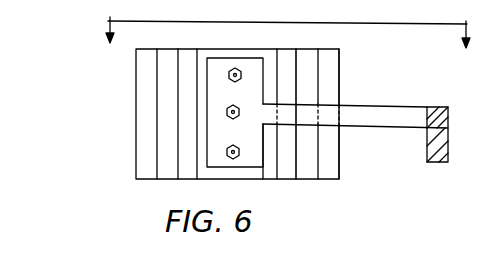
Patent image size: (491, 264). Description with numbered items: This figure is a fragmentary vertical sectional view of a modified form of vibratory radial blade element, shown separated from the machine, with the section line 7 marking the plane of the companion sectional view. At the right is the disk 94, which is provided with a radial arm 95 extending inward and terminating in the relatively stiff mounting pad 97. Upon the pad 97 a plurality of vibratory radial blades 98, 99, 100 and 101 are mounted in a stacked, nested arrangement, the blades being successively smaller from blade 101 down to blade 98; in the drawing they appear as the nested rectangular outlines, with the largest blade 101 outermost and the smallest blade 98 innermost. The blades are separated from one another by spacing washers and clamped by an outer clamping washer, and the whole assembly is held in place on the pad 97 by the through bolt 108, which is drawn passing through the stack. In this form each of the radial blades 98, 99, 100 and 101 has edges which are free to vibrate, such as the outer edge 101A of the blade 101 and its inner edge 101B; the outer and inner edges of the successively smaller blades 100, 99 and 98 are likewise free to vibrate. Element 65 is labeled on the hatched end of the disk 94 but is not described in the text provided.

The section line 7- 7 is at (288, 29).
The hatched end section 65 is at (438, 160).
The disk 94 is at (436, 107).
The radial arm 95 is at (379, 111).
The mounting pad 97 is at (250, 163).
The vibratory radial blade 98 is at (207, 172).
The vibratory radial blade 99 is at (285, 172).
The vibratory radial blade 100 is at (308, 172).
The vibratory radial blade 101 is at (327, 170).
The outer edge 101A is at (136, 122).
The inner edge 101B is at (340, 172).
The through bolt 108 is at (234, 105).